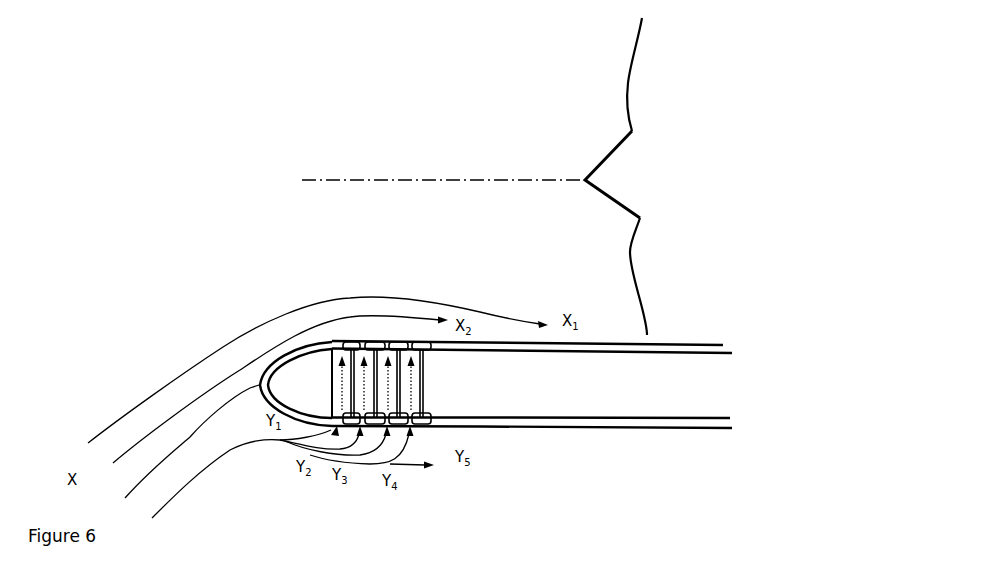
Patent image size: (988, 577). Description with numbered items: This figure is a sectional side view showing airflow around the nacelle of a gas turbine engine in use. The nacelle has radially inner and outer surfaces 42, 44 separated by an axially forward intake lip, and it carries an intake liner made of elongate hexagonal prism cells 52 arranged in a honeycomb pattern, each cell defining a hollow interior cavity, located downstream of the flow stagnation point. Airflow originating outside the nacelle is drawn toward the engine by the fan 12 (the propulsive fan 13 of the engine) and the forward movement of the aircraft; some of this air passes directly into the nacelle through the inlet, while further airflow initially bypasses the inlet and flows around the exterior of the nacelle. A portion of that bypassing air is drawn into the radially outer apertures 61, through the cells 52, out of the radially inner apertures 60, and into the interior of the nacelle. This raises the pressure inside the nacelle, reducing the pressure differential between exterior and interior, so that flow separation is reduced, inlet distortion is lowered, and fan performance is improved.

The fan 12 is at (632, 258).
The propulsive fan 13 is at (413, 180).
The radially inner surface 42 is at (665, 343).
The radially outer surface 44 is at (635, 433).
The hexagonal prism cell 52 is at (423, 382).
The radially inner aperture 60 is at (335, 348).
The radially outer aperture 61 is at (450, 428).